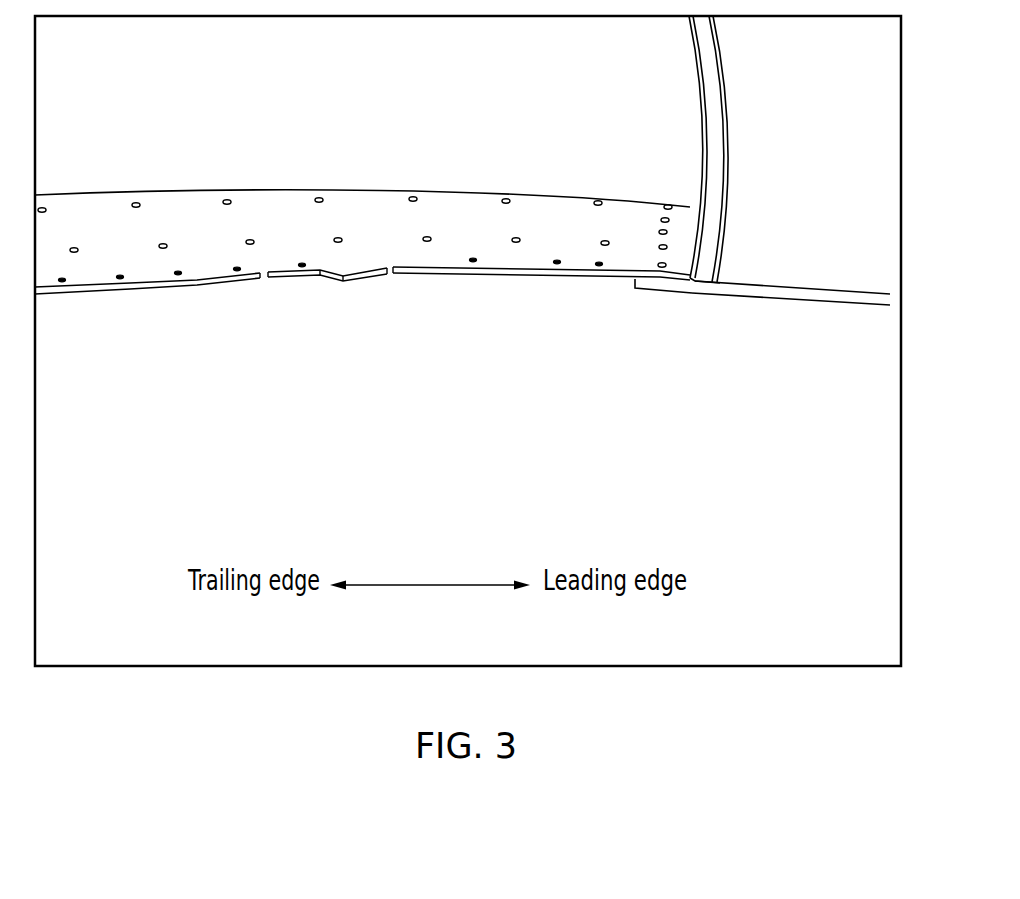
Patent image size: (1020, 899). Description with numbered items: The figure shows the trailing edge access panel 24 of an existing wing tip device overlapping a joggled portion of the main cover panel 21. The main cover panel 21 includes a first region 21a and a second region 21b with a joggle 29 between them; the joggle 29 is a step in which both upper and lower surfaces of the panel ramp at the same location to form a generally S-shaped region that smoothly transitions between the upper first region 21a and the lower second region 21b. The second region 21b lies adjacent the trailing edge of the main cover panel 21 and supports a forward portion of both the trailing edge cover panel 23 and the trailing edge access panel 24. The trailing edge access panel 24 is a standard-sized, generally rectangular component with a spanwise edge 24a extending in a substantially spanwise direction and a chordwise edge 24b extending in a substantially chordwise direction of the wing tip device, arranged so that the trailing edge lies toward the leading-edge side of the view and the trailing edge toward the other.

The main cover panel 21 is at (831, 156).
The first region 21a is at (825, 295).
The second region 21b is at (665, 287).
The trailing edge cover panel 23 is at (421, 140).
The trailing edge access panel 24 is at (148, 262).
The spanwise edge 24a is at (697, 231).
The chordwise edge 24b is at (148, 193).
The joggle 29 is at (701, 291).